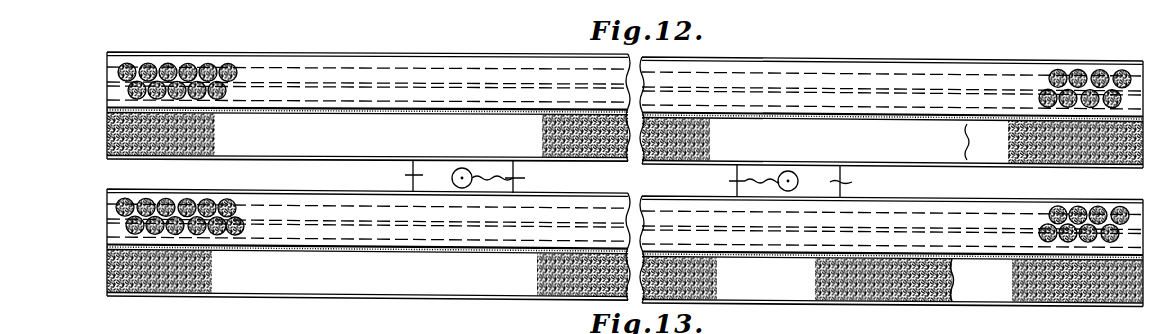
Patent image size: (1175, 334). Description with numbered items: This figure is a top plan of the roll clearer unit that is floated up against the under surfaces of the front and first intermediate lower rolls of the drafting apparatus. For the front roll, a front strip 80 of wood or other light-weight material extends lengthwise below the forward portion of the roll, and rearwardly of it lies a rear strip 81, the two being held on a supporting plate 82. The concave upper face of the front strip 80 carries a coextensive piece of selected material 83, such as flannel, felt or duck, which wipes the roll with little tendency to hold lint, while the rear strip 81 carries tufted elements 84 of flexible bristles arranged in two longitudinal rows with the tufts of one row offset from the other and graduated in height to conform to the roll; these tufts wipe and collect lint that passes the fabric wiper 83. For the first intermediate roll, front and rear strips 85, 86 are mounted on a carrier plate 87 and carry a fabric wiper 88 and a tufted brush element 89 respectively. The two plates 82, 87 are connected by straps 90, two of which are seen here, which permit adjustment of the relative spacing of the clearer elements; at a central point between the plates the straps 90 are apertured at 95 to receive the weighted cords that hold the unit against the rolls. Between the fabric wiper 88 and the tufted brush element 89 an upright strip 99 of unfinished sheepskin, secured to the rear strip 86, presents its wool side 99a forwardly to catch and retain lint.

The front strip 80 is at (986, 295).
The rear strip 81 is at (115, 237).
The supporting plate 82 is at (268, 292).
The piece of selected material 83 is at (171, 283).
The tufted elements 84 is at (117, 207).
The front strip 85 is at (997, 152).
The rear strip 86 is at (113, 79).
The carrier plate 87 is at (317, 161).
The fabric wiper 88 is at (172, 145).
The tufted brush element 89 is at (170, 66).
The straps 90 is at (629, 179).
The apertures 95 is at (625, 179).
The upright strip 99 is at (326, 106).
The wool side 99a is at (402, 113).